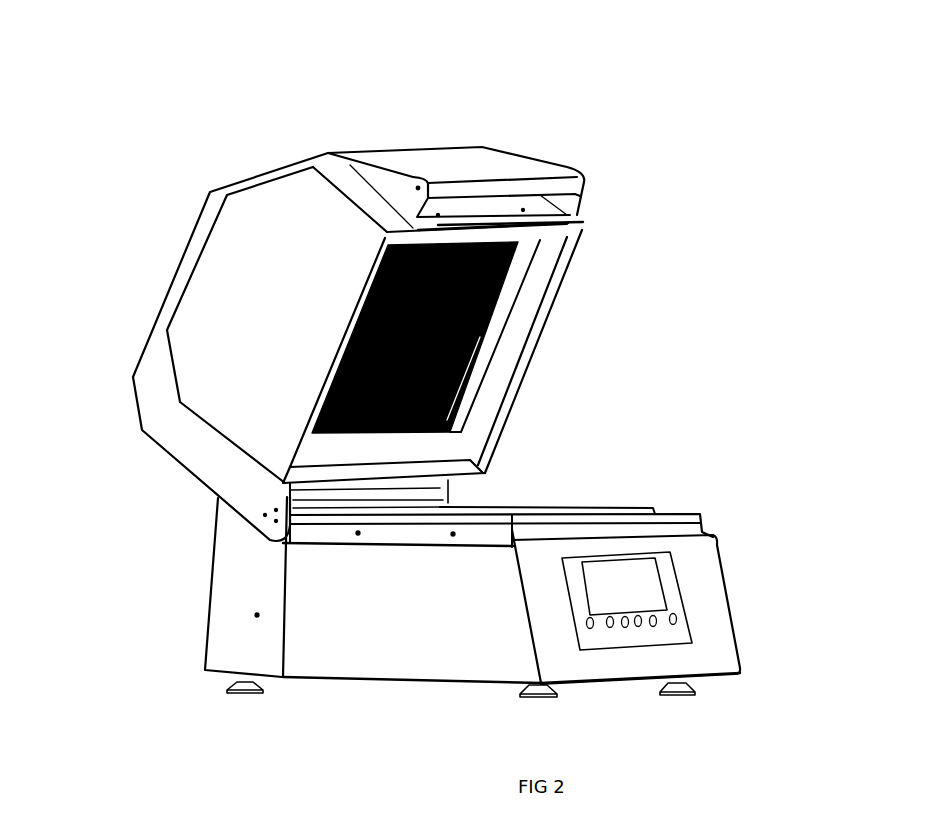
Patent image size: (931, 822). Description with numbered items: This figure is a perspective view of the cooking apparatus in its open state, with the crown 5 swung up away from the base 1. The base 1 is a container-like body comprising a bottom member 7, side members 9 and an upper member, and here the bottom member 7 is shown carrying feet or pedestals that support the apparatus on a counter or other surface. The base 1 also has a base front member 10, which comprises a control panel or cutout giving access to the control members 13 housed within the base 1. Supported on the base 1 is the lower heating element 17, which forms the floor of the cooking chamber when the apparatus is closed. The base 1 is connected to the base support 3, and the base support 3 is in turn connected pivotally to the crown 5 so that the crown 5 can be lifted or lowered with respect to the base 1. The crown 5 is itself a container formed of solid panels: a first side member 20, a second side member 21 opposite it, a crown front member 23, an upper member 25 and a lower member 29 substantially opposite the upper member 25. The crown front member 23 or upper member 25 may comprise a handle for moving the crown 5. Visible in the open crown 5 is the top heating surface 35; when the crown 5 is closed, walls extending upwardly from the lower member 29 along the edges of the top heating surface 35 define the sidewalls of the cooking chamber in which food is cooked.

The base 1 is at (337, 685).
The base support 3 is at (227, 650).
The crown 5 is at (212, 365).
The bottom member 7 is at (483, 685).
The side members 9 is at (430, 650).
The base front member 10 is at (707, 587).
The control members 13 is at (643, 637).
The lower heating element 17 is at (508, 510).
The first side member 20 is at (155, 382).
The second side member 21 is at (563, 290).
The crown front member 23 is at (470, 163).
The upper member 25 is at (183, 255).
The lower member 29 is at (543, 255).
The top heating surface 35 is at (480, 337).